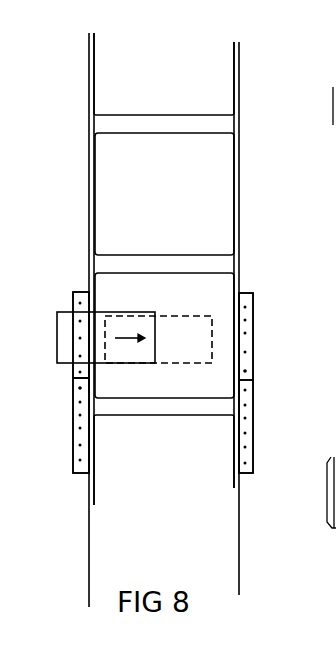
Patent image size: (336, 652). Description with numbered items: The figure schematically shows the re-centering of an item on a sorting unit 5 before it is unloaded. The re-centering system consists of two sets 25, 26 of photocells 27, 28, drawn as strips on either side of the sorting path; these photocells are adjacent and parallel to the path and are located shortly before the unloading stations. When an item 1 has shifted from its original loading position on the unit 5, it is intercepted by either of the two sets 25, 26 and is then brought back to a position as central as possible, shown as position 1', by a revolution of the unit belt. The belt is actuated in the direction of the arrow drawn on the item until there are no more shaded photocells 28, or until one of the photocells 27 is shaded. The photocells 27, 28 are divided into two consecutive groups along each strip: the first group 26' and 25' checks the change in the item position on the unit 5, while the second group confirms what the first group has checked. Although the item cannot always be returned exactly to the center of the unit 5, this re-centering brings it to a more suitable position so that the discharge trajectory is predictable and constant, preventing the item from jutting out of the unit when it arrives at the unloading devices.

The item 1 is at (87, 322).
The re-centered position of the item 1' is at (158, 318).
The label on carrier web 5 is at (233, 275).
The set of photocells 25 is at (287, 383).
The first group of photocells 25' is at (277, 426).
The set of photocells 26 is at (44, 382).
The first group of photocells 26' is at (49, 425).
The photocell 27 is at (245, 371).
The photocell 28 is at (78, 388).